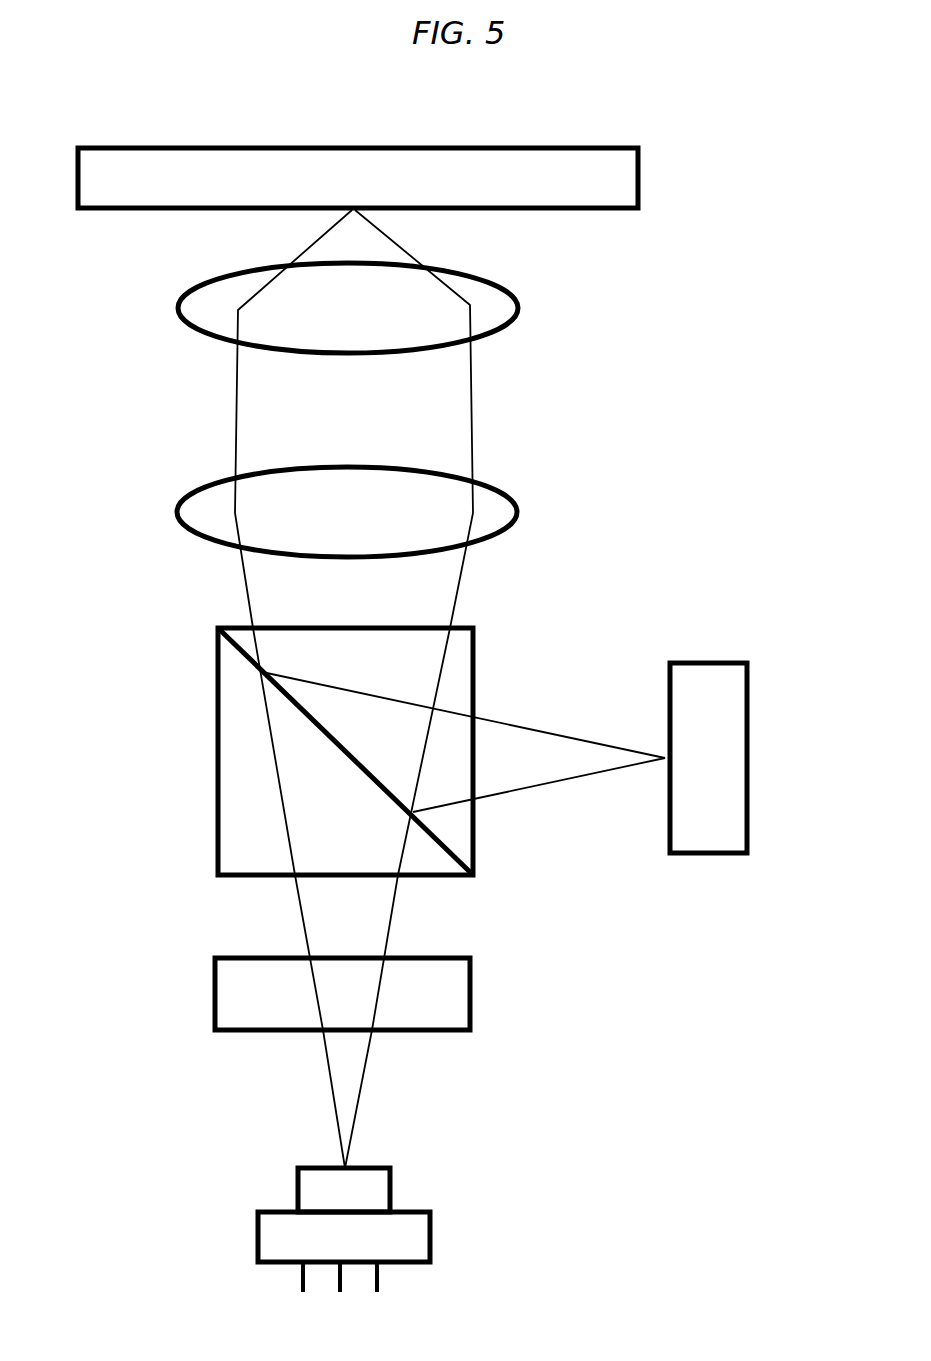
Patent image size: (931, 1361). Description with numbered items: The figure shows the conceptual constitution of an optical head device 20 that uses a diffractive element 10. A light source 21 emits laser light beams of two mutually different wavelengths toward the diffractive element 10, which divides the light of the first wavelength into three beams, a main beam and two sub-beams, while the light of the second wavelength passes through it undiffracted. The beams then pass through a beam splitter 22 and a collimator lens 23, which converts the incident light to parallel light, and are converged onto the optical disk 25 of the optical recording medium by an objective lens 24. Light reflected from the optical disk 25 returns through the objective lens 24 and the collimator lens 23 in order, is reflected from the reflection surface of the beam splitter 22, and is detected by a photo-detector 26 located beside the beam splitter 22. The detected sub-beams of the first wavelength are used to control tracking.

The optical head device 20 is at (742, 262).
The optical disk 25 is at (640, 175).
The objective lens 24 is at (178, 308).
The collimator lens 23 is at (177, 512).
The beam splitter 22 is at (218, 768).
The photo-detector 26 is at (747, 712).
The diffractive element 10 is at (470, 990).
The light source 21 is at (430, 1228).